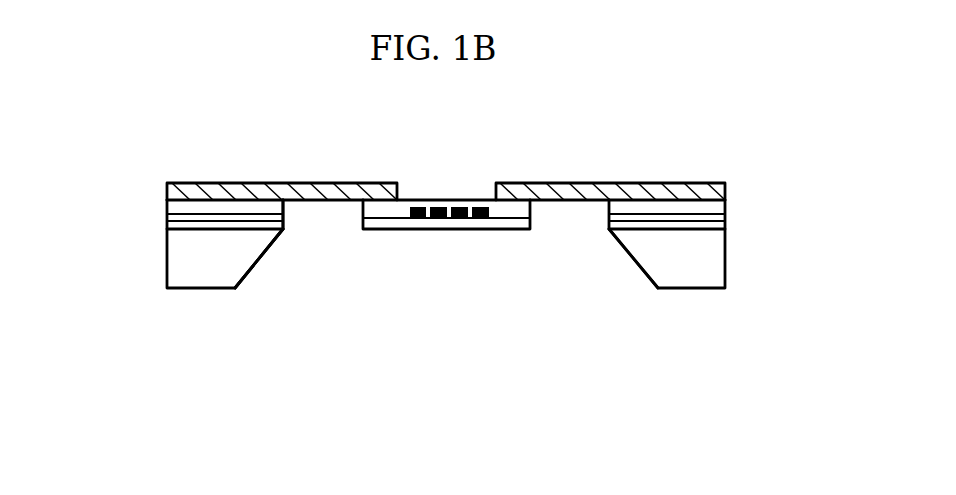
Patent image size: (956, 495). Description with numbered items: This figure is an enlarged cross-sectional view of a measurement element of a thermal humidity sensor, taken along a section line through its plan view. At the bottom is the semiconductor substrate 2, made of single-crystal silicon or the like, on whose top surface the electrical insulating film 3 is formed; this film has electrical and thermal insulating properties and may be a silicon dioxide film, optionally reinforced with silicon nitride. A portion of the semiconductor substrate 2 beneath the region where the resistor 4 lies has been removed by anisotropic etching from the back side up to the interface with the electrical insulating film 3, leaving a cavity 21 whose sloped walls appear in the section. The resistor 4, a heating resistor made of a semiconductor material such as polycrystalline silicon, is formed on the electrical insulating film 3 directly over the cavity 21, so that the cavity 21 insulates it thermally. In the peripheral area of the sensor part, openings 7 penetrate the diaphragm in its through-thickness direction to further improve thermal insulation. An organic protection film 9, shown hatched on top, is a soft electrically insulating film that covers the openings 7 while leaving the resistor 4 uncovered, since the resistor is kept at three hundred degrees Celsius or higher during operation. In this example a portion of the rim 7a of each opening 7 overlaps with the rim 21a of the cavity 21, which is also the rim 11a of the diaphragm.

The semiconductor substrate 2 is at (725, 267).
The electrical insulating film 3 is at (725, 205).
The resistor 4 is at (438, 203).
The opening 7 is at (318, 216).
The rim of opening 7a is at (285, 202).
The organic protection film 9 is at (259, 184).
The cavity 21 is at (402, 262).
The rim of cavity 21a is at (265, 300).
The rim of diaphragm 11a is at (294, 226).